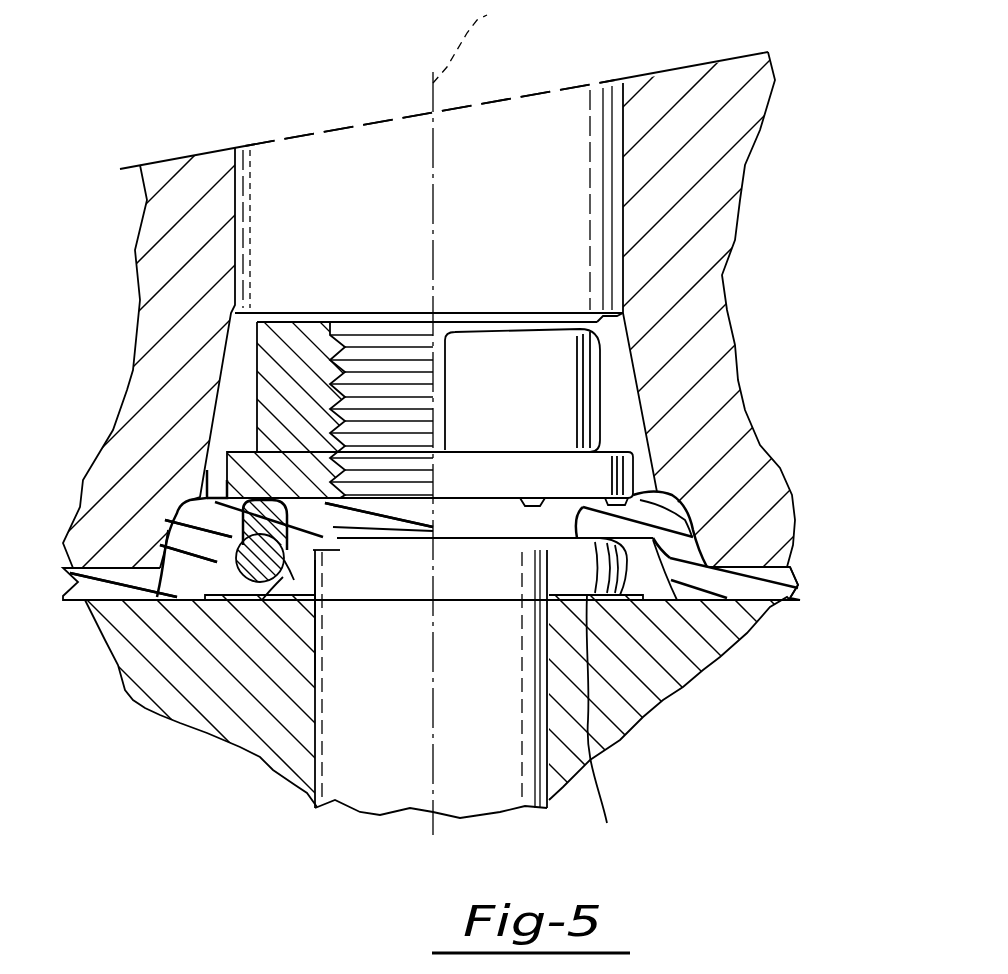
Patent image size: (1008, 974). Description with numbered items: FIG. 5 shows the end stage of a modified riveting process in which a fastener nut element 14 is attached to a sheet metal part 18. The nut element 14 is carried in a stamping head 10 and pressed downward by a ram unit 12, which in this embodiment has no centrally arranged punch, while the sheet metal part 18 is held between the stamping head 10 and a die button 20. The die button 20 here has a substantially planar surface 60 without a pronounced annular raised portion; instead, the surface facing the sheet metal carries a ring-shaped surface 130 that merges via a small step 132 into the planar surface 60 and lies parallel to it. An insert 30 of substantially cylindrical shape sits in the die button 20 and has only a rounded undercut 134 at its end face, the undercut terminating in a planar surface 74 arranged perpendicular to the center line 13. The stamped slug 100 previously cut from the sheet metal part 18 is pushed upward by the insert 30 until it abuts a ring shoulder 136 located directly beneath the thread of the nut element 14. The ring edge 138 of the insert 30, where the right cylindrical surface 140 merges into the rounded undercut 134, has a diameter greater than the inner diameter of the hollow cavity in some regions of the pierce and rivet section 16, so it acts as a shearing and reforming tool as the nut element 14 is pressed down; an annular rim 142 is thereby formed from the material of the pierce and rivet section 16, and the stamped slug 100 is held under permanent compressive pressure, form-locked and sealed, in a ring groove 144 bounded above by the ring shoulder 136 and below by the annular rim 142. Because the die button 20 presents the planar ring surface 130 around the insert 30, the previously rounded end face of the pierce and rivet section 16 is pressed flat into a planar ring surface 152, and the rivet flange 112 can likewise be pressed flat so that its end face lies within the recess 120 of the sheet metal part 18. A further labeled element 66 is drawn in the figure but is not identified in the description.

The stamping head 10 is at (732, 272).
The ram unit 12 is at (501, 90).
The center line 13 is at (474, 43).
The fastener nut element 14 is at (615, 400).
The pierce and rivet section 16 is at (158, 560).
The sheet metal part 18 is at (800, 592).
The die button 20 is at (670, 700).
The insert 30 is at (359, 810).
The planar surface 60 is at (780, 597).
The seal lip 66 is at (715, 490).
The planar surface 74 is at (379, 528).
The stamped slug 100 is at (398, 515).
The rivet flange 112 is at (283, 577).
The recess 120 is at (725, 528).
The ring-shaped surface 130 is at (255, 585).
The small step 132 is at (228, 562).
The rounded undercut 134 is at (332, 528).
The ring shoulder 136 is at (262, 452).
The ring edge 138 is at (300, 565).
The right cylindrical surface 140 is at (317, 667).
The annular rim 142 is at (235, 485).
The ring groove 144 is at (233, 473).
The planar ring surface 152 is at (612, 723).